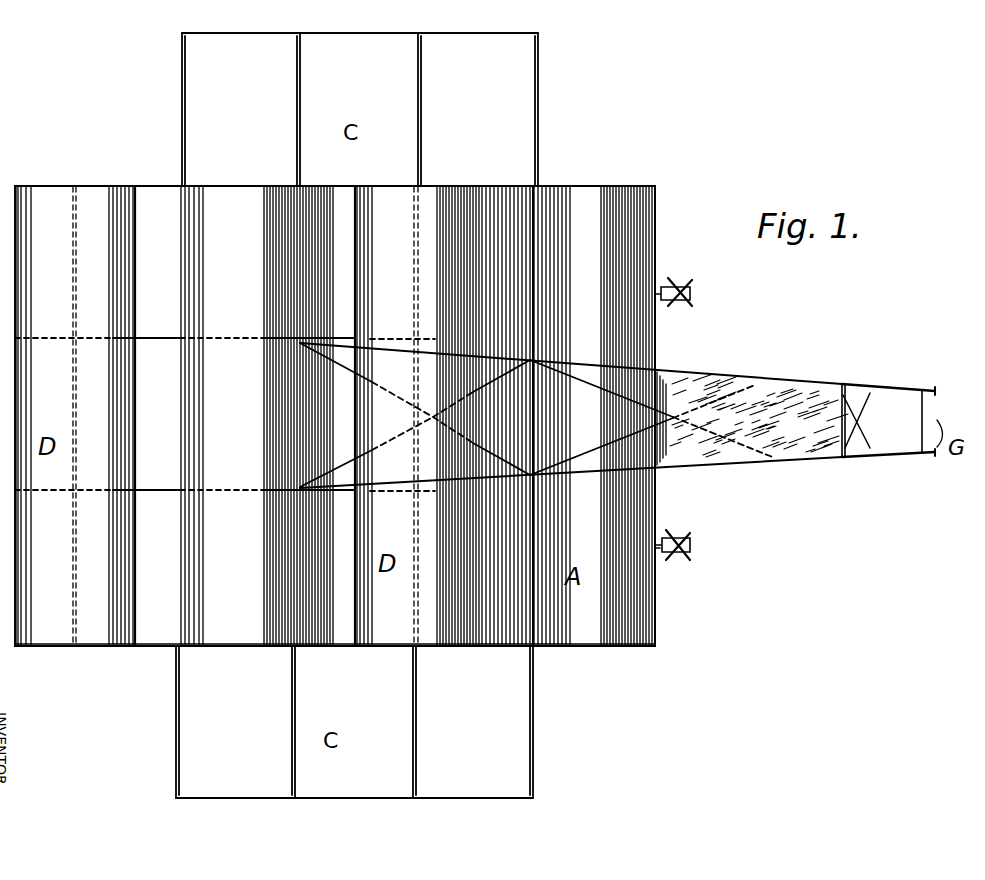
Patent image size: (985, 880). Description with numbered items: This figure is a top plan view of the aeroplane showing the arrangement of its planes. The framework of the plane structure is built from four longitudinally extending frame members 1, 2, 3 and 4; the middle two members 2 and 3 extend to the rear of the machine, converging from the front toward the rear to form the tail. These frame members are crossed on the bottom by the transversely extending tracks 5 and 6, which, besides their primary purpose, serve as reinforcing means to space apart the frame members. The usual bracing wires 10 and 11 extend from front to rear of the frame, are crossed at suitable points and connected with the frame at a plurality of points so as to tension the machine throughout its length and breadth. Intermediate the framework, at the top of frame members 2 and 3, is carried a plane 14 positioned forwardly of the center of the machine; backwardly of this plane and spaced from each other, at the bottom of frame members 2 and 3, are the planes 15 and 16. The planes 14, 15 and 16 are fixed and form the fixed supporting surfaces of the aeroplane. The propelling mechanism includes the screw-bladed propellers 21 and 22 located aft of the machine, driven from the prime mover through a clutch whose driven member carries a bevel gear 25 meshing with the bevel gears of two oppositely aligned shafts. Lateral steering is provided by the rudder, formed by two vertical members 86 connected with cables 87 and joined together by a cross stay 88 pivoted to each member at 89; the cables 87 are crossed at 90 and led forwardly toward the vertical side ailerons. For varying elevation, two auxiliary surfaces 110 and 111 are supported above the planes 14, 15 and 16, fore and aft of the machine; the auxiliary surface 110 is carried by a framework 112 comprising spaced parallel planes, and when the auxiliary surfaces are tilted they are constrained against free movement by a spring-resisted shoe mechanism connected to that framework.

The longitudinally extending frame member 1 is at (147, 186).
The longitudinally extending frame member 2 is at (150, 338).
The longitudinally extending frame member 3 is at (150, 490).
The longitudinally extending frame member 4 is at (150, 645).
The transversely extending track 5 is at (297, 132).
The transversely extending track 6 is at (535, 126).
The bracing wire 10 is at (342, 373).
The bracing wire 11 is at (338, 471).
The plane 14 is at (237, 650).
The plane 15 is at (330, 636).
The plane 16 is at (508, 634).
The propeller 21 is at (690, 540).
The propeller 22 is at (690, 283).
The bevel gear 25 is at (657, 548).
The vertical member 86 is at (893, 389).
The cable 87 is at (861, 400).
The cross stay 88 is at (887, 454).
The pivot 89 is at (937, 393).
The crossing of cables 90 is at (837, 403).
The auxiliary surface 110 is at (38, 200).
The auxiliary surface 111 is at (395, 640).
The framework 112 is at (55, 648).